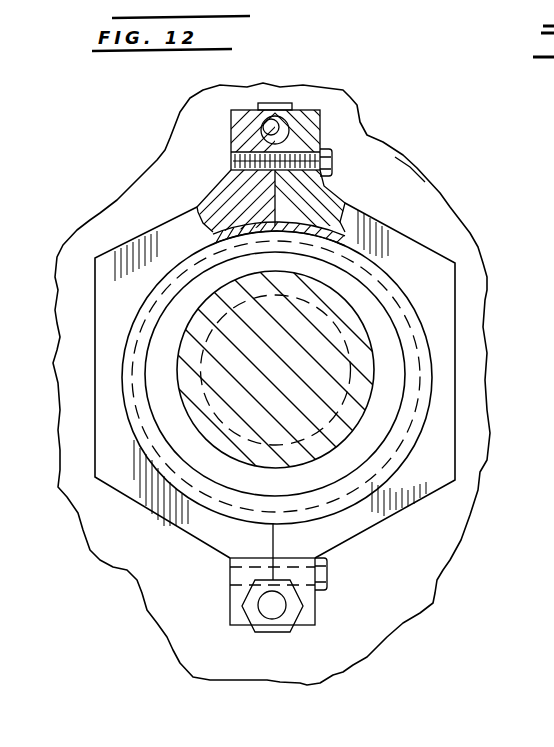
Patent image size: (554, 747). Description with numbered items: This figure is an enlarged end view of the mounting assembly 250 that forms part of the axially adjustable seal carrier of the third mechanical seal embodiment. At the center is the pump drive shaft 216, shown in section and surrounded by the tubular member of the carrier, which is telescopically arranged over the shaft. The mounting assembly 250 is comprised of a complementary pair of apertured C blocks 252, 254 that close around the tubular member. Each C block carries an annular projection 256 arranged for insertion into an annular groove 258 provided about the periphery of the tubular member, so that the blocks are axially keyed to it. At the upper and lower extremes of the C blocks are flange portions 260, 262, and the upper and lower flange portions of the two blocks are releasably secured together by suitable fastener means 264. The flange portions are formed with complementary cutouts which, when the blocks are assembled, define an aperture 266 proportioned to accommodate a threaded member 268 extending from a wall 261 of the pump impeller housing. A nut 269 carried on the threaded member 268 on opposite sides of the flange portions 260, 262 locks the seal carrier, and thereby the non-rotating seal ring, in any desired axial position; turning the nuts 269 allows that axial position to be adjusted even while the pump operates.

The pump drive shaft 216 is at (366, 396).
The mounting assembly 250 is at (72, 228).
The C block 252 is at (440, 470).
The C block 254 is at (98, 480).
The annular projection 256 is at (322, 172).
The annular groove 258 is at (418, 346).
The upper flange portion 260 is at (231, 146).
The wall 261 is at (413, 172).
The lower flange portion 262 is at (231, 599).
The fastener means 264 is at (333, 152).
The aperture 266 is at (288, 119).
The threaded member 268 is at (264, 127).
The nut 269 is at (278, 110).